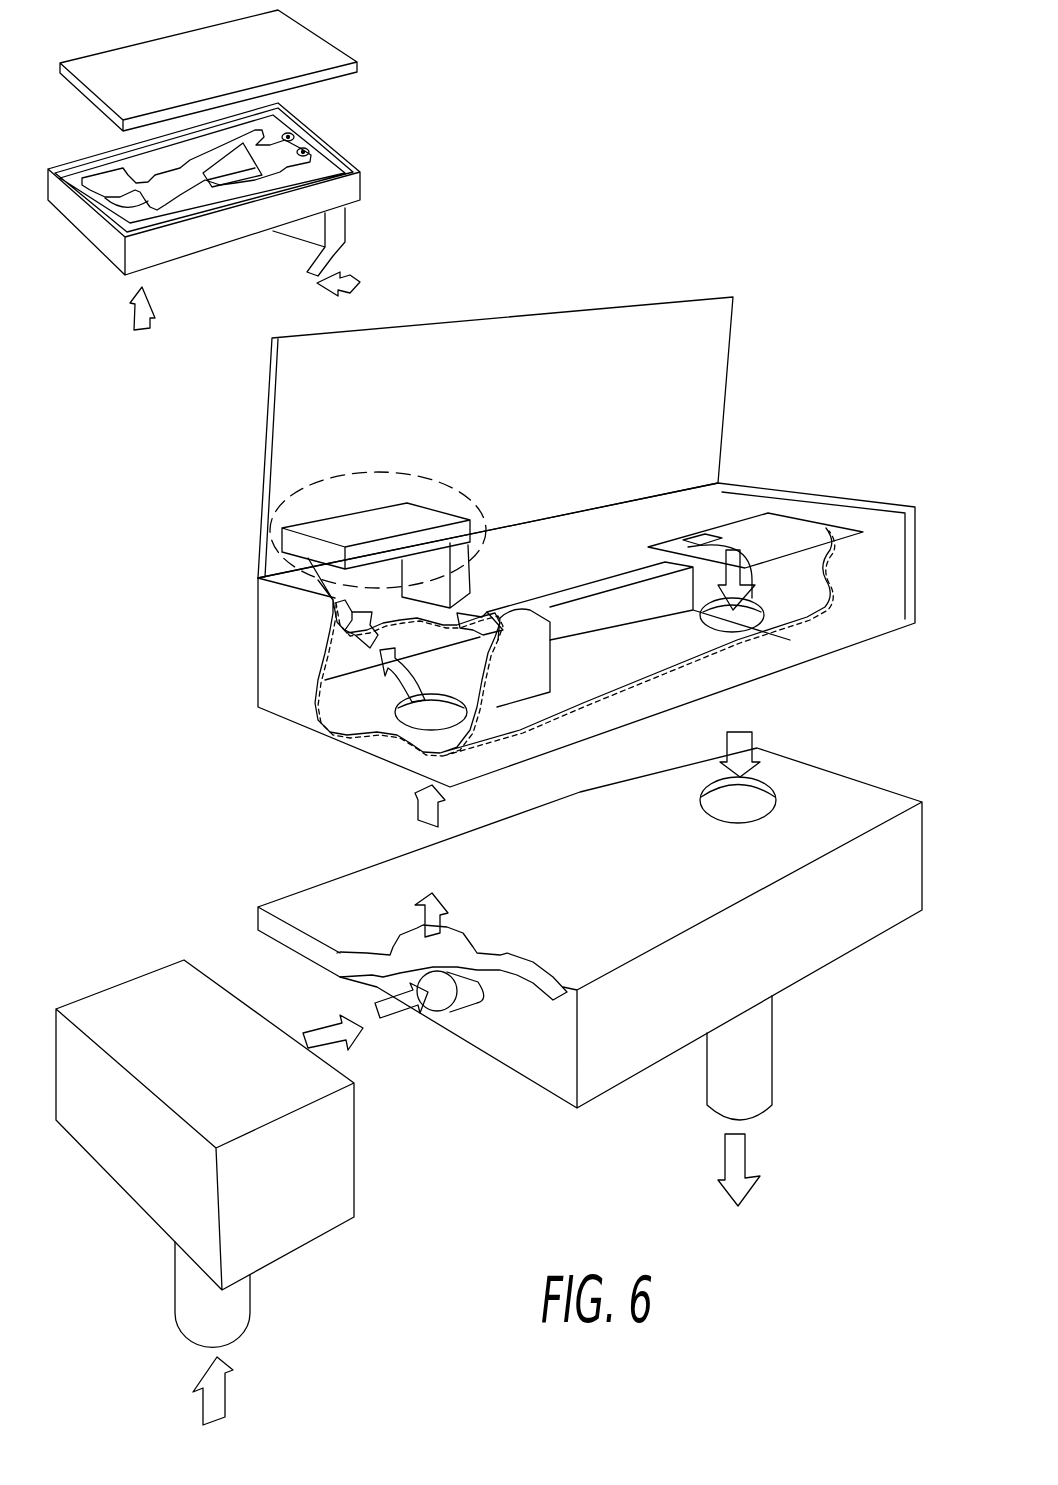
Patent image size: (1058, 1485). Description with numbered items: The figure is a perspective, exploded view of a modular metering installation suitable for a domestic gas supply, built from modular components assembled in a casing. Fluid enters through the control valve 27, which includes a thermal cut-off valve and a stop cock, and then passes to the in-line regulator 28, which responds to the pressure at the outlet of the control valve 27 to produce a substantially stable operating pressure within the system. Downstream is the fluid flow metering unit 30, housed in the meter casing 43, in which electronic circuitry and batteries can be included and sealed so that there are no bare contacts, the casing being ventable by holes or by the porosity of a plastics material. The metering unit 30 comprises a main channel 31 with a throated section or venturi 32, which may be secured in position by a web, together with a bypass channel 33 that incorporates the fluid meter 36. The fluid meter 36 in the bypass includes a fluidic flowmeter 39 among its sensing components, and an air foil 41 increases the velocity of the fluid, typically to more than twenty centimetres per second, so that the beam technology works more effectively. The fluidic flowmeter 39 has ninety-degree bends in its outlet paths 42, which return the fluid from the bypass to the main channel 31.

The control valve 27 is at (162, 1198).
The in-line regulator 28 is at (860, 919).
The fluid flow metering unit 30 is at (850, 487).
The main channel 31 is at (613, 580).
The throated section or venturi 32 is at (477, 645).
The bypass channel 33 is at (330, 615).
The fluid meter 36 is at (267, 257).
The fluidic flowmeter 39 is at (233, 187).
The air foil 41 is at (238, 188).
The outlet paths 42 is at (313, 152).
The meter casing 43 is at (857, 627).